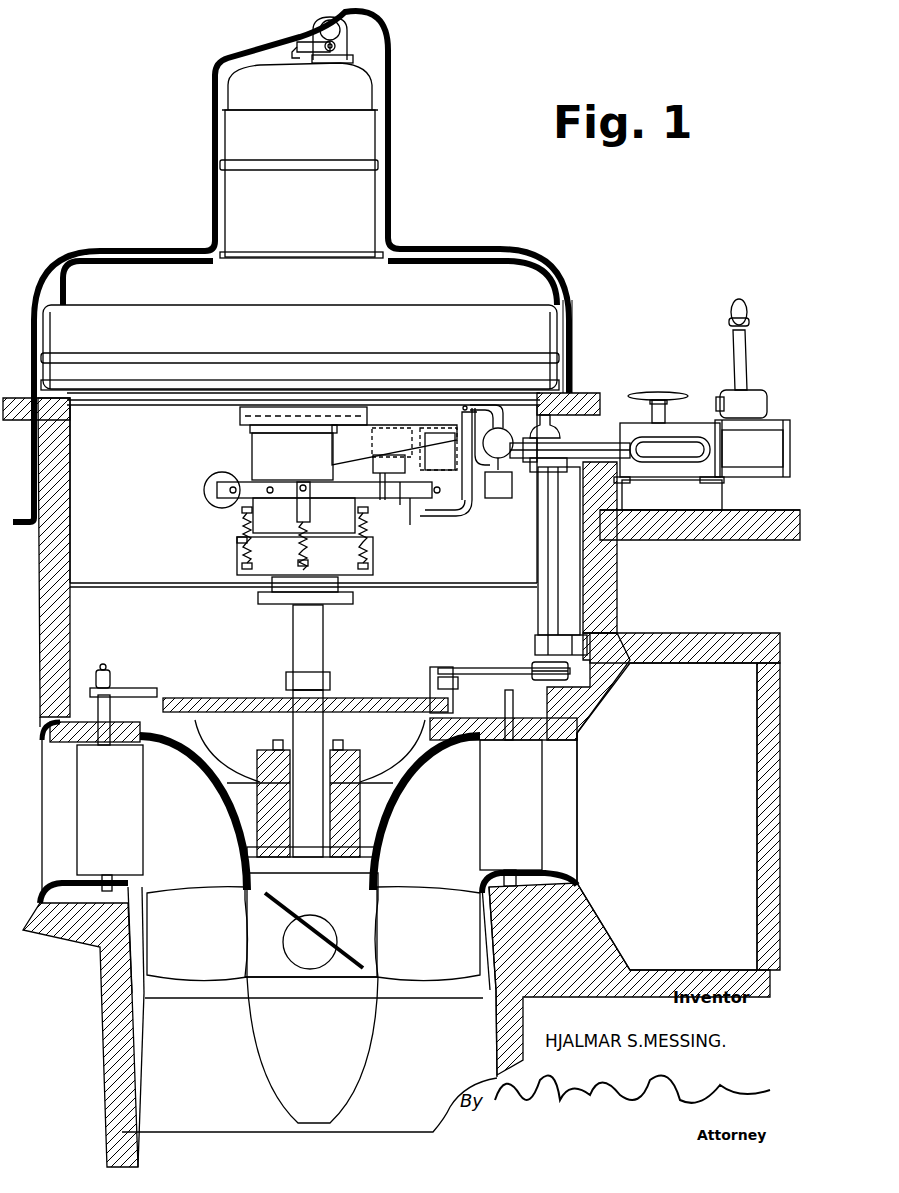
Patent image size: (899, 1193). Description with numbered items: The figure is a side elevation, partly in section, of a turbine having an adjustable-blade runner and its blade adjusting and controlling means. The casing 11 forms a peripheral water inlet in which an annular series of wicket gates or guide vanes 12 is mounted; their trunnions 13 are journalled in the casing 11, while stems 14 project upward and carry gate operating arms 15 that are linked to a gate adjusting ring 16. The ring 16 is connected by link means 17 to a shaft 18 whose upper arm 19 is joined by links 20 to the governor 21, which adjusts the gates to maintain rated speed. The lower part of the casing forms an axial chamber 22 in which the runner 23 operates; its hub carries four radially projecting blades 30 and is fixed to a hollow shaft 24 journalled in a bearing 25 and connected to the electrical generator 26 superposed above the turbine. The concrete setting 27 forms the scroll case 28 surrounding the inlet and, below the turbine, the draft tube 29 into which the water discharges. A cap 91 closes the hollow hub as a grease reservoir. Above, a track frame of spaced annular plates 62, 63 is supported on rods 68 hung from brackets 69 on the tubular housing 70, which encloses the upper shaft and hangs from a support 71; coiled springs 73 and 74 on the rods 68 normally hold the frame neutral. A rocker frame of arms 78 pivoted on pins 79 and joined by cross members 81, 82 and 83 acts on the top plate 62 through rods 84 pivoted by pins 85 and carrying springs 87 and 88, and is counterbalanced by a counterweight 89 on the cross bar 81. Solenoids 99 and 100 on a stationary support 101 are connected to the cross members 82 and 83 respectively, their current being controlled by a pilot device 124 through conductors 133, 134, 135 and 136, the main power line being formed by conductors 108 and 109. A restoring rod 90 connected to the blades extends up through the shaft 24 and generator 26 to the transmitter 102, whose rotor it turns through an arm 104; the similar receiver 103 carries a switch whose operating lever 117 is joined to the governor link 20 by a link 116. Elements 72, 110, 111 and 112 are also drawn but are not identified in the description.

The casing 11 is at (48, 740).
The wicket gates or guide vanes 12 is at (309, 807).
The trunnions 13 is at (110, 875).
The stems 14 is at (102, 745).
The gate operating arms 15 is at (150, 684).
The gate adjusting ring 16 is at (408, 688).
The link means 17 is at (528, 660).
The shaft 18 is at (540, 588).
The arm 19 is at (555, 420).
The links 20 is at (596, 444).
The governor 21 is at (700, 425).
The chamber 22 is at (314, 989).
The runner 23 is at (311, 925).
The shaft 24 is at (322, 655).
The bearing 25 is at (325, 812).
The electrical generator 26 is at (300, 446).
The concrete setting 27 is at (698, 524).
The scroll case 28 is at (667, 816).
The draft tube 29 is at (309, 1117).
The blades 30 is at (336, 978).
The annular plate 62 is at (368, 524).
The annular plate 63 is at (370, 578).
The rods or bolts 68 is at (246, 527).
The brackets 69 is at (248, 498).
The tubular housing 70 is at (292, 456).
The support 71 is at (205, 395).
The spring seat 72 is at (240, 540).
The coiled spring 73 is at (243, 520).
The coiled spring 74 is at (243, 550).
The side members or arms 78 is at (410, 498).
The pins 79 is at (270, 495).
The cross member 81 is at (222, 492).
The cross member 82 is at (400, 505).
The cross member 83 is at (440, 493).
The rods 84 is at (298, 560).
The pivot pins 85 is at (306, 485).
The coiled spring 87 is at (306, 525).
The coiled spring 88 is at (308, 555).
The counterweight 89 is at (210, 482).
The restoring rod 90 is at (304, 48).
The cap 91 is at (312, 1050).
The solenoid 99 is at (389, 463).
The solenoid 100 is at (438, 449).
The stationary support 101 is at (394, 445).
The transmitting device 102 is at (340, 40).
The receiving device 103 is at (482, 405).
The arm 104 is at (310, 40).
The conductor 108 is at (113, 250).
The conductor 109 is at (165, 240).
The tube wall 110 is at (560, 280).
The tube wall 111 is at (574, 302).
The tube wall 112 is at (566, 328).
The link 116 is at (512, 498).
The operating lever 117 is at (510, 410).
The pilot device 124 is at (500, 485).
The conductor 133 is at (445, 500).
The conductor 134 is at (490, 500).
The conductor 135 is at (475, 500).
The conductor 136 is at (405, 432).